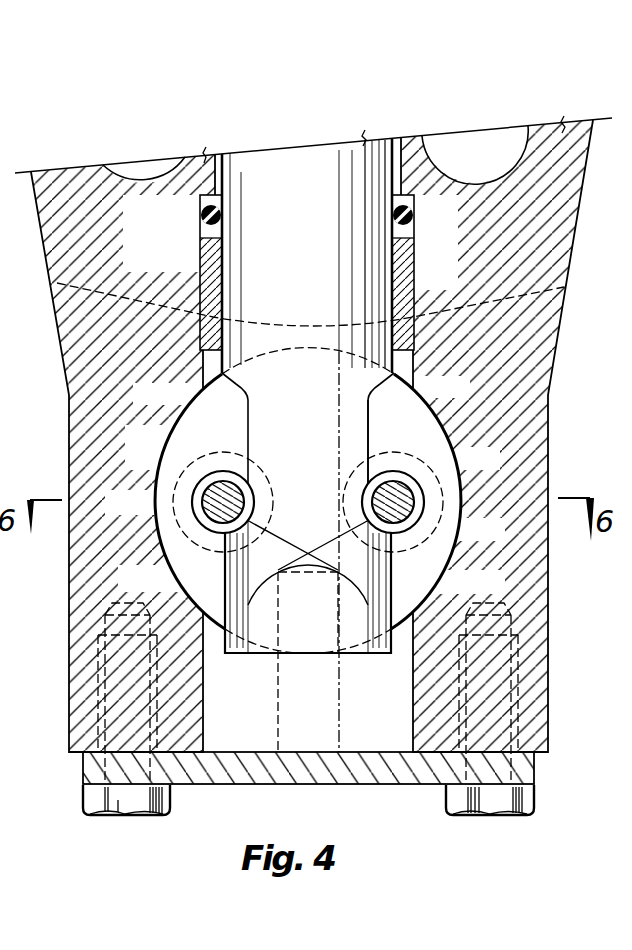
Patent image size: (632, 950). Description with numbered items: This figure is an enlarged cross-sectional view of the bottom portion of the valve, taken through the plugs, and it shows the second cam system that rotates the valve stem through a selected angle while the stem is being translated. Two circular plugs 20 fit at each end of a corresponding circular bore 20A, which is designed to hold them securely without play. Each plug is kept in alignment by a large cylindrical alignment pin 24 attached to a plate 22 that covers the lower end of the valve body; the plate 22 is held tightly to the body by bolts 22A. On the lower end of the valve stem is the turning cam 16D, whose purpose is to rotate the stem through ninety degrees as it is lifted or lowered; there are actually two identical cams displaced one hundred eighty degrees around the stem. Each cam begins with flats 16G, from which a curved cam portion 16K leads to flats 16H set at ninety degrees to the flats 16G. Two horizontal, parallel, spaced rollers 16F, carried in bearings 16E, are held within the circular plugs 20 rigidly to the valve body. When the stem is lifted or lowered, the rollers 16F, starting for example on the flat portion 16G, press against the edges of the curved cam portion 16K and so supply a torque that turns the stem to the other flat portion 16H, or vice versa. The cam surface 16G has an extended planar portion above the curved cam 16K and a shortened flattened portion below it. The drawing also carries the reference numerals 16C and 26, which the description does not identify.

The tubular member 16C is at (343, 280).
The turning cam 16D is at (348, 400).
The bearings 16E is at (192, 504).
The rollers 16F is at (217, 487).
The flats 16G is at (370, 429).
The flats 16H is at (320, 609).
The curved cam portion 16K is at (396, 568).
The circular plugs 20 is at (205, 401).
The circular bore 20A is at (178, 561).
The plate 22 is at (207, 786).
The bolts 22A is at (92, 806).
The alignment pin 24 is at (213, 266).
The screw 26 is at (202, 213).